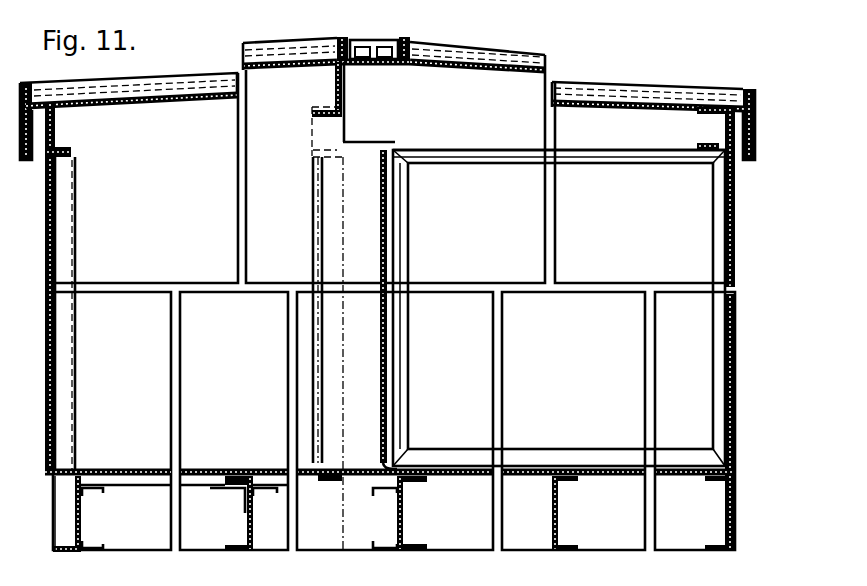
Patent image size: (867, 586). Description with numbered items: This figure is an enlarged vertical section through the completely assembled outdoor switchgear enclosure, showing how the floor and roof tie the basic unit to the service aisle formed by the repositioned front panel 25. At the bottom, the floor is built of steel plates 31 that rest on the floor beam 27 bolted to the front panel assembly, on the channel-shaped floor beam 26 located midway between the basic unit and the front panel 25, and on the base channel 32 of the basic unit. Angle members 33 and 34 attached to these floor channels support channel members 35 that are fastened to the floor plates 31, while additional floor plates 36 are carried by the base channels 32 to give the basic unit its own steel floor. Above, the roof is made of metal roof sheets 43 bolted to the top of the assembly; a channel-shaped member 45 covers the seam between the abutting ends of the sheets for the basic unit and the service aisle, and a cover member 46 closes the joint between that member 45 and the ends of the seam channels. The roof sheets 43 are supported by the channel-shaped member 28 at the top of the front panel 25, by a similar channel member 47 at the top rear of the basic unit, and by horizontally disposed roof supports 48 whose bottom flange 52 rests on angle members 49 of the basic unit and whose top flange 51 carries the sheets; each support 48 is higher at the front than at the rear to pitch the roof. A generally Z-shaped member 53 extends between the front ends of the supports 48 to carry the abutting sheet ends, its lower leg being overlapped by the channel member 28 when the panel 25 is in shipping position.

The front panel 25 is at (46, 260).
The floor beam 26 is at (253, 532).
The floor beam 27 is at (74, 516).
The channel-shaped member 28 is at (53, 138).
The floor plates 31 is at (141, 469).
The base channel 32 is at (402, 508).
The angle member 33 is at (85, 497).
The angle member 34 is at (243, 508).
The channel members 35 is at (158, 488).
The additional floor plates 36 is at (482, 478).
The roof sheets 43 is at (290, 62).
The channel-shaped member 45 is at (386, 42).
The cover member 46 is at (347, 40).
The channel member 47 is at (726, 130).
The roof supports 48 is at (542, 92).
The angle members 49 is at (496, 170).
The flange 51 is at (453, 68).
The flange 52 is at (490, 150).
The Z-shaped member 53 is at (335, 87).